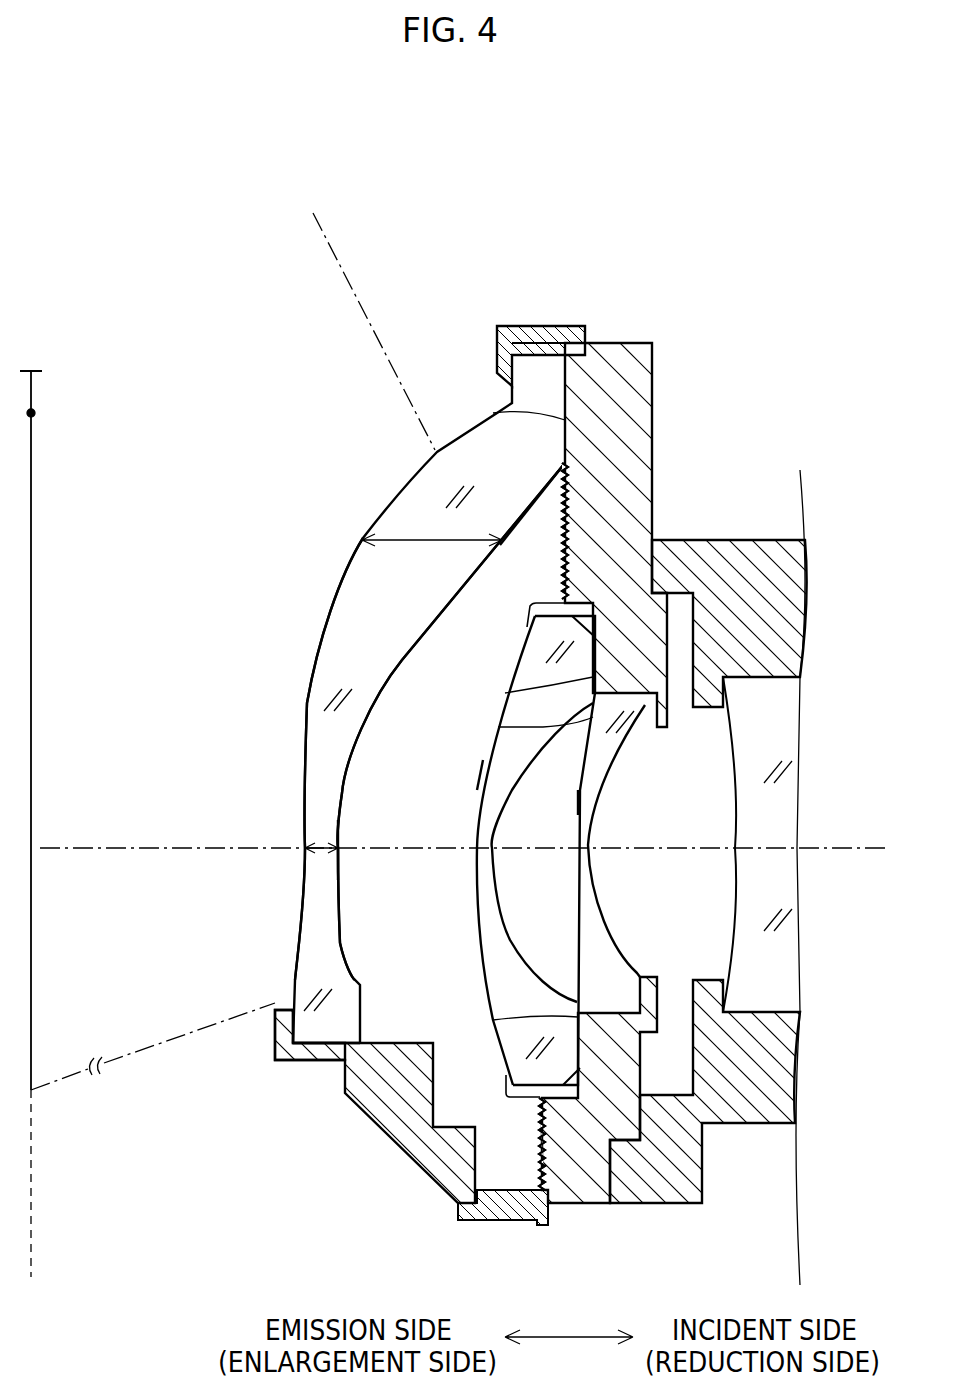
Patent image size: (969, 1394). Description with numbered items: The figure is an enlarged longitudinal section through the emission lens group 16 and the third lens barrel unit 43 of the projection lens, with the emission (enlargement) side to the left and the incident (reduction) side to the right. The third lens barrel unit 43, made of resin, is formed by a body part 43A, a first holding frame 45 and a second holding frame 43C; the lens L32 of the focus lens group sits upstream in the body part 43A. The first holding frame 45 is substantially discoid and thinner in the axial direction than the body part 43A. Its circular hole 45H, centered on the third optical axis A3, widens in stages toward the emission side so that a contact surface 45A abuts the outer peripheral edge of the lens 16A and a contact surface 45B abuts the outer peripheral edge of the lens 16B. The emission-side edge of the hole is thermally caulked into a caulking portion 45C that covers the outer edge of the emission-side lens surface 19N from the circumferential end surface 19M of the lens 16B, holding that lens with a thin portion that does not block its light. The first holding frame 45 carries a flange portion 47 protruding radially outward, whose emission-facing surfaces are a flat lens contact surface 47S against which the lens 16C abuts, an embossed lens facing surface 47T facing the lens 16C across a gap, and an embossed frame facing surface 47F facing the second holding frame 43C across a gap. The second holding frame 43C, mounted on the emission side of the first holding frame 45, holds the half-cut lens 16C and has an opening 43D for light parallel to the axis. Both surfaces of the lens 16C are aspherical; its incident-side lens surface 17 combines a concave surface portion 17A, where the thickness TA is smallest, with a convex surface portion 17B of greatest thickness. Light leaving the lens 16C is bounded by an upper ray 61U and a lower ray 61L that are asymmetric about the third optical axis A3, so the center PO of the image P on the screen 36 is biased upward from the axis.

The emission lens group 16 is at (280, 950).
The lens 16A is at (578, 802).
The lens 16B is at (487, 770).
The lens 16C is at (304, 703).
The incident-side lens surface 17 is at (354, 918).
The concave surface portion 17A is at (342, 856).
The convex surface portion 17B is at (510, 553).
The circumferential end surface 19M is at (575, 600).
The emission-side lens surface 19N is at (485, 973).
The screen 36 is at (33, 1197).
The third lens barrel unit 43 is at (762, 526).
The body part 43A is at (800, 578).
The second holding frame 43C is at (365, 1113).
The opening 43D is at (275, 1008).
The first holding frame 45 is at (630, 332).
The contact surface 45A is at (648, 712).
The contact surface 45B is at (505, 693).
The caulking portion 45C is at (525, 618).
The circular hole 45H is at (498, 727).
The flange portion 47 is at (640, 410).
The frame facing surface 47F is at (540, 1195).
The lens contact surface 47S is at (497, 413).
The lens facing surface 47T is at (567, 500).
The upper ray 61U is at (362, 280).
The lower ray 61L is at (160, 1046).
The third optical axis A3 is at (262, 852).
The lens L32 is at (792, 830).
The image P is at (33, 508).
The center of the image PO is at (33, 413).
The thickness of the concave surface portion TA is at (323, 847).